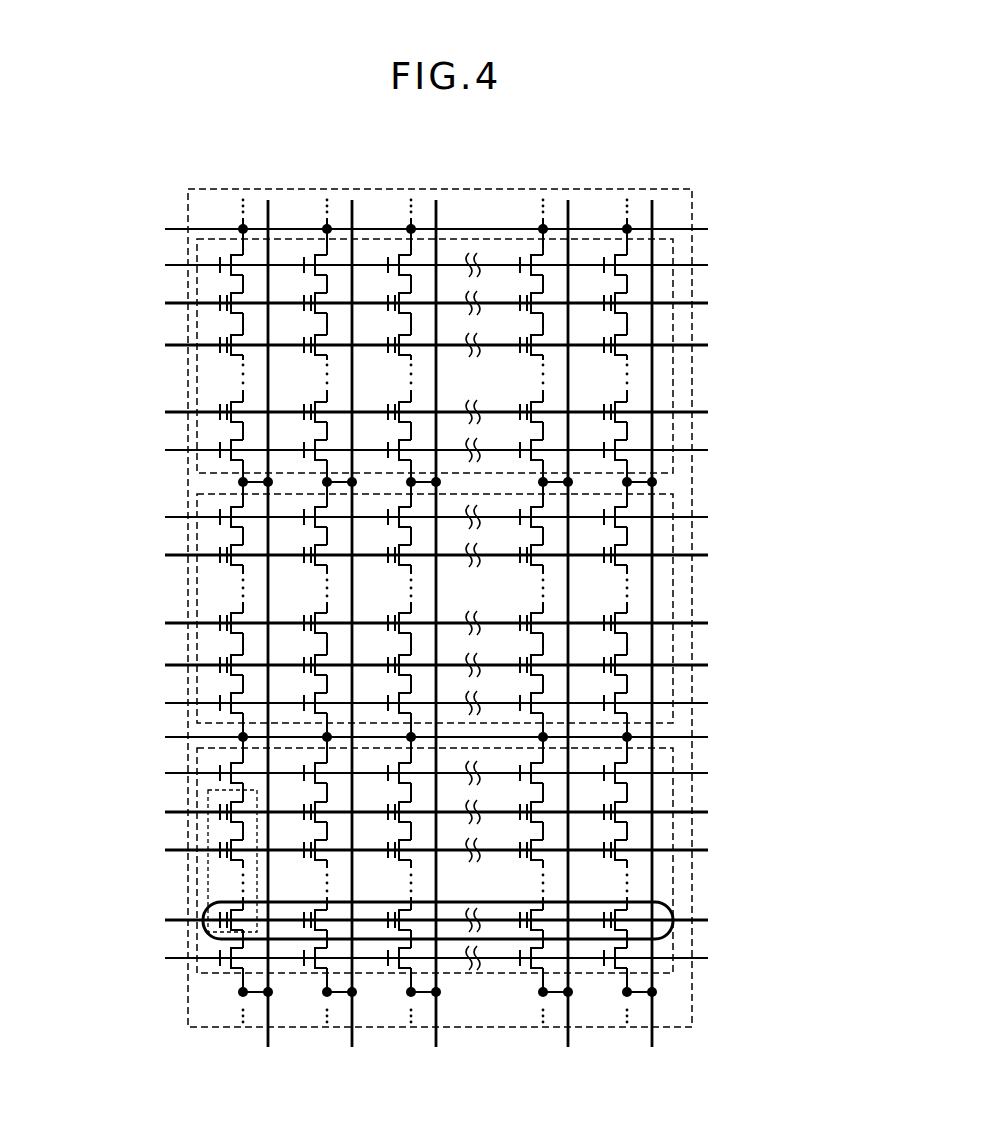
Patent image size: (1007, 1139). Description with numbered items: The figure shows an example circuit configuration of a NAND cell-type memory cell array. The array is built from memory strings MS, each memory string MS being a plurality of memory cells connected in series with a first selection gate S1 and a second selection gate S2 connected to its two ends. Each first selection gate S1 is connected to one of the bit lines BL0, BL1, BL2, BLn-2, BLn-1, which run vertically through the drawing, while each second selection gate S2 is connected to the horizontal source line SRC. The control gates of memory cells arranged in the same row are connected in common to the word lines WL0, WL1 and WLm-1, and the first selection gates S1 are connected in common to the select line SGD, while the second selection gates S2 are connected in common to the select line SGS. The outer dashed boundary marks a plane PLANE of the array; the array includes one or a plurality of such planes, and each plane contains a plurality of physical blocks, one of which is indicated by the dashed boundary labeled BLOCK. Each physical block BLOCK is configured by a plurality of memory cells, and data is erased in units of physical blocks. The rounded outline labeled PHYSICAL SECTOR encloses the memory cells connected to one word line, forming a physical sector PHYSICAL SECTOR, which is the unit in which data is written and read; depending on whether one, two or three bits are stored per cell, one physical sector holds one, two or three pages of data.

The bit line BL0 is at (252, 601).
The bit line BL1 is at (336, 601).
The bit line BL2 is at (419, 601).
The bit line BLn-2 is at (544, 601).
The bit line BLn-1 is at (628, 601).
The select line SGD is at (459, 483).
The select line SGS is at (458, 738).
The word line WLm-1 is at (465, 555).
The word line WL1 is at (457, 623).
The word line WL0 is at (457, 665).
The source line SRC is at (458, 736).
The plane PLANE is at (697, 1003).
The physical block BLOCK is at (196, 892).
The physical sector PHYSICAL SECTOR is at (676, 928).
The memory string MS is at (206, 832).
The selection gate S2 is at (219, 767).
The selection gate S1 is at (219, 965).